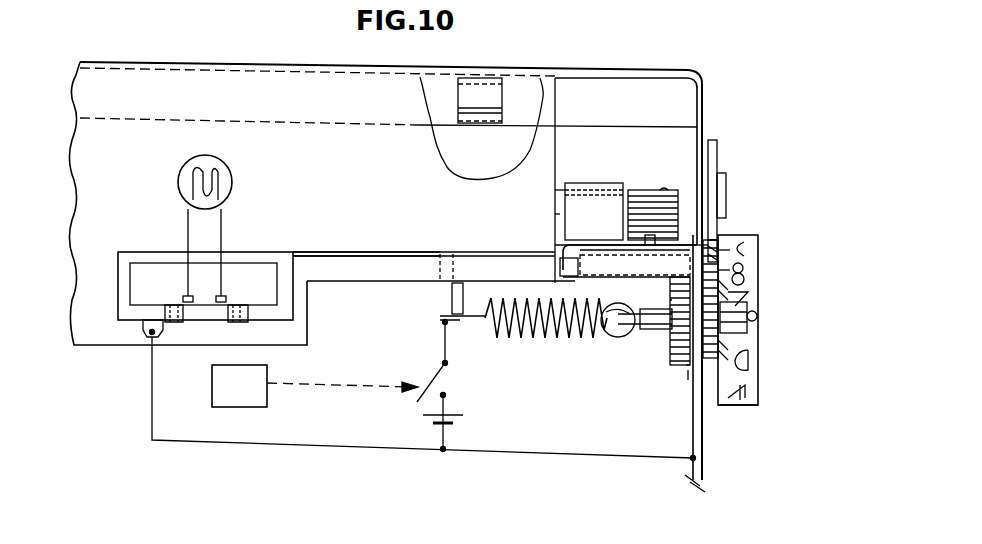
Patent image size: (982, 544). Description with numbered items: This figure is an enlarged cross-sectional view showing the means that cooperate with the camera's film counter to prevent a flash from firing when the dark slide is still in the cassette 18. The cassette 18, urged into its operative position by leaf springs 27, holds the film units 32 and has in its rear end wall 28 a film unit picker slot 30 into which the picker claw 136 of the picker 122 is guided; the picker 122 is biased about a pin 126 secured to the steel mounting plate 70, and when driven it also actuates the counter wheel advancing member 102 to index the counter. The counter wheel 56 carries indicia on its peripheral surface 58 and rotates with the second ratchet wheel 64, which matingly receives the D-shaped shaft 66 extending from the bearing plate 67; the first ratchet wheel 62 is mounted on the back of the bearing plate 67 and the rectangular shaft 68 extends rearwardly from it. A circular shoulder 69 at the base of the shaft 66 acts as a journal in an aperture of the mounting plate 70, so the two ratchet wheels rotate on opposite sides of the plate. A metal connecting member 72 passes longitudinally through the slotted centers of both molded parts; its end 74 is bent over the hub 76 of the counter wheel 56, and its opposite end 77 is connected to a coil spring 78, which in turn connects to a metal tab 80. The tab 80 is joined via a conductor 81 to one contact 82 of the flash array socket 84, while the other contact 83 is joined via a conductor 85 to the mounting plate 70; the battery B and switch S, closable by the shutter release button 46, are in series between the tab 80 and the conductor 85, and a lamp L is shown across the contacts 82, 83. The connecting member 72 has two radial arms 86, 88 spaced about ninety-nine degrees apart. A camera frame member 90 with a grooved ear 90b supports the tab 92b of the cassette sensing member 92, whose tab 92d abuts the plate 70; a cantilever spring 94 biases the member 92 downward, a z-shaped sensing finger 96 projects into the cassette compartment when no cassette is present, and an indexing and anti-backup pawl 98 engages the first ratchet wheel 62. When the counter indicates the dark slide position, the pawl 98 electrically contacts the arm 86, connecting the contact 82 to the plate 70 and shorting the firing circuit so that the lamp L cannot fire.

The cassette 18 is at (648, 125).
The leaf springs 27 is at (490, 93).
The rear end wall 28 is at (642, 165).
The film unit picker slot 30 is at (664, 196).
The film units 32 is at (654, 219).
The shutter release button 46 is at (214, 383).
The counter wheel 56 is at (758, 390).
The peripheral surface 58 is at (757, 405).
The first ratchet wheel 62 is at (690, 370).
The second ratchet wheel 64 is at (708, 385).
The D-shaped shaft 66 is at (745, 298).
The bearing plate 67 is at (688, 392).
The rectangular shaft 68 is at (675, 362).
The circular shoulder 69 is at (740, 342).
The mounting plate 70 is at (700, 74).
The connecting member 72 is at (656, 327).
The end of connecting member 74 is at (748, 327).
The hub 76 is at (757, 312).
The opposite end of connecting member 77 is at (620, 332).
The coil spring 78 is at (522, 338).
The metal tab 80 is at (441, 318).
The conductor 81 is at (344, 253).
The contact 82 is at (238, 298).
The other contact 83 is at (178, 297).
The flash array socket 84 is at (178, 262).
The conductor 85 is at (338, 447).
The arm 86 is at (676, 316).
The arm 88 is at (688, 370).
The camera frame member 90 is at (366, 188).
The grooved ear 90b is at (566, 245).
The cassette sensing member 92 is at (556, 214).
The tab 92b is at (565, 263).
The tab 92d is at (702, 230).
The cantilever spring 94 is at (738, 272).
The sensing finger 96 is at (560, 196).
The indexing and anti-backup pawl 98 is at (738, 252).
The counter wheel advancing member 102 is at (715, 248).
The picker 122 is at (716, 162).
The pin 126 is at (726, 197).
The picker claw 136 is at (626, 222).
The lamp L is at (182, 160).
The switch S is at (430, 370).
The battery B is at (460, 420).